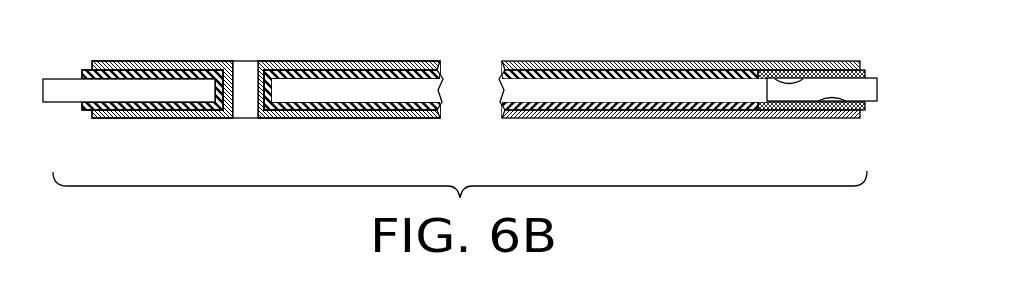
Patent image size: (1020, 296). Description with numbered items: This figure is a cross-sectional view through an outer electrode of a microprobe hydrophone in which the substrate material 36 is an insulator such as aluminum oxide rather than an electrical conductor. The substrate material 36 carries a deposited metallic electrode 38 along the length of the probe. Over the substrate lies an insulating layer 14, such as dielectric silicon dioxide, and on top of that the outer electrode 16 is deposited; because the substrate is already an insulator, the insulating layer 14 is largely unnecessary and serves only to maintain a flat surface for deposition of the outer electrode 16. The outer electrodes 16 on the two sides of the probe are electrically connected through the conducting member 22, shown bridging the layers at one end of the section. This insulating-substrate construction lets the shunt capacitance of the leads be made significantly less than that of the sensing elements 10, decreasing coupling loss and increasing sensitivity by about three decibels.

The sensing elements 10 is at (815, 62).
The electrical insulating material 14 is at (347, 62).
The outer electrode 16 is at (272, 62).
The conducting member 22 is at (242, 61).
The substrate material 36 is at (364, 93).
The metallic electrode 38 is at (771, 62).